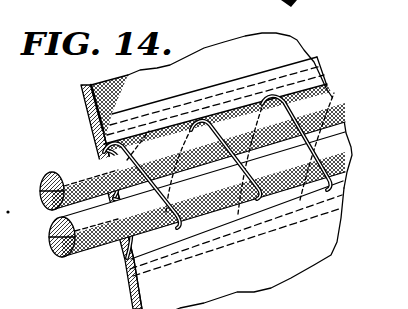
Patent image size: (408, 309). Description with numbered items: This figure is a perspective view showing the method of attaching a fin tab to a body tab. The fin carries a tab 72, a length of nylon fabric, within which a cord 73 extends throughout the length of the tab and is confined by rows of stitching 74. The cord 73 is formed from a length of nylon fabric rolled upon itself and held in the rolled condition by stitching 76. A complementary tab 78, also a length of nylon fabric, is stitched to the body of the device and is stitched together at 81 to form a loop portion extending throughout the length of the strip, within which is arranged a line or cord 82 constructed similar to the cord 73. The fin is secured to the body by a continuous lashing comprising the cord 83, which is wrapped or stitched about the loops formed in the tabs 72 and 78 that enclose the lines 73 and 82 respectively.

The tab 72 is at (234, 47).
The cord 73 is at (70, 168).
The rows of stitching 74 is at (320, 73).
The stitching 76 is at (40, 192).
The complementary tab 78 is at (254, 248).
The stitching 81 is at (337, 206).
The line or cord 82 is at (82, 256).
The cord 83 is at (297, 117).